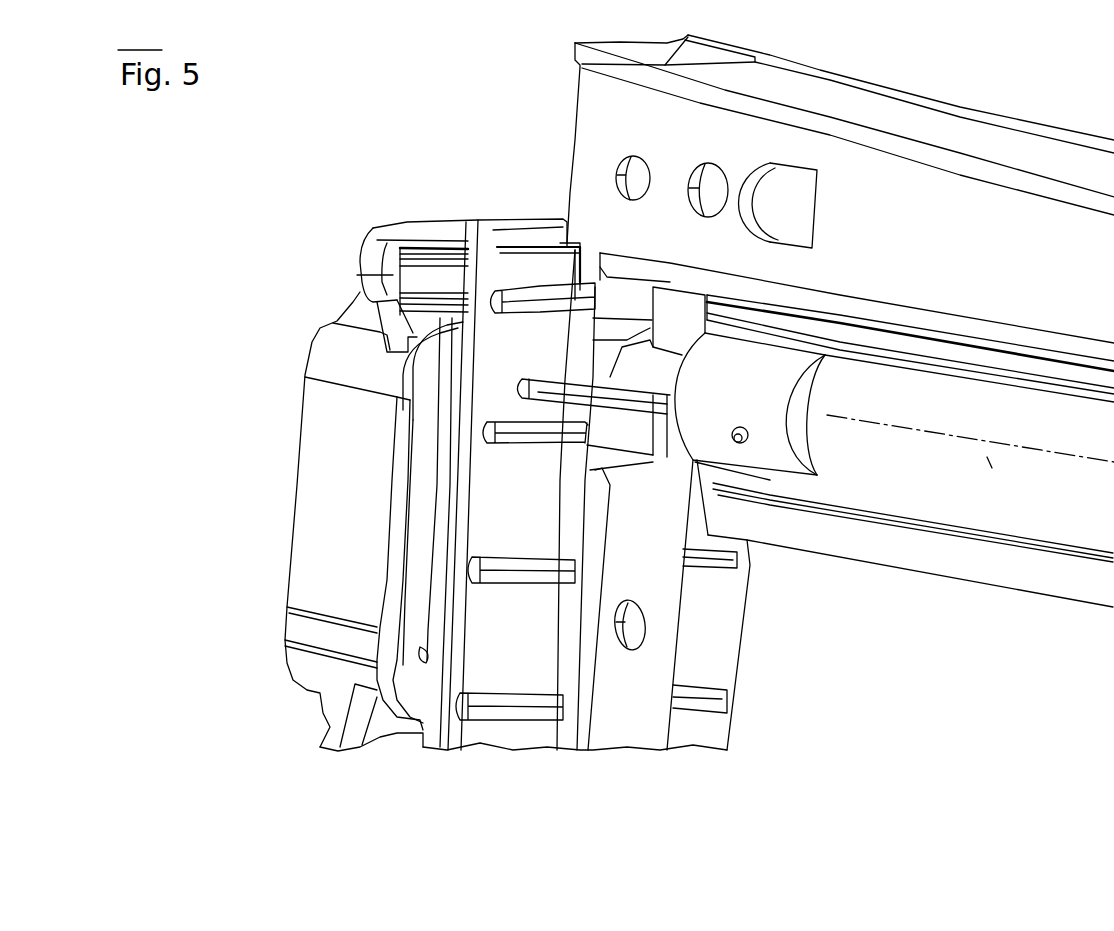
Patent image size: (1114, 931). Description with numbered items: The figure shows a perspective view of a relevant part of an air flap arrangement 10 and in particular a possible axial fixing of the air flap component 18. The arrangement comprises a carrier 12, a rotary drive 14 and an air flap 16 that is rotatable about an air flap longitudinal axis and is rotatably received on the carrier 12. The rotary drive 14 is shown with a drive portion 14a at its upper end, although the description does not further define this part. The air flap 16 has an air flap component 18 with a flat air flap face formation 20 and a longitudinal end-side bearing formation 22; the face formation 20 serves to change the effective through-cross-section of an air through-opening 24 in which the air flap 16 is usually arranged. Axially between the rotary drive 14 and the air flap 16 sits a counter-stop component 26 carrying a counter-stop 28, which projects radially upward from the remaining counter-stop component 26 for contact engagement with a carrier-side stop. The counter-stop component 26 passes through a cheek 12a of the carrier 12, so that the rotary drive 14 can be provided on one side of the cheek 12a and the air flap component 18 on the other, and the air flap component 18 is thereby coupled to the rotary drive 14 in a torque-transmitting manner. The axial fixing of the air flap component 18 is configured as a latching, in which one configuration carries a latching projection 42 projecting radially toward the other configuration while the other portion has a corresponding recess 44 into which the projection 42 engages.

The air flap arrangement 10 is at (399, 98).
The carrier 12 is at (622, 720).
The cheek 12a is at (650, 657).
The rotary drive 14 is at (266, 424).
The latch cap of housing 14a is at (368, 250).
The air flap 16 is at (925, 600).
The air flap component 18 is at (838, 540).
The air flap face formation 20 is at (940, 494).
The bearing formation 22 is at (739, 401).
The air through-opening 24 is at (868, 707).
The counter-stop component 26 is at (656, 383).
The counter-stop 28 is at (694, 327).
The latching projection 42 is at (740, 443).
The recess 44 is at (752, 427).